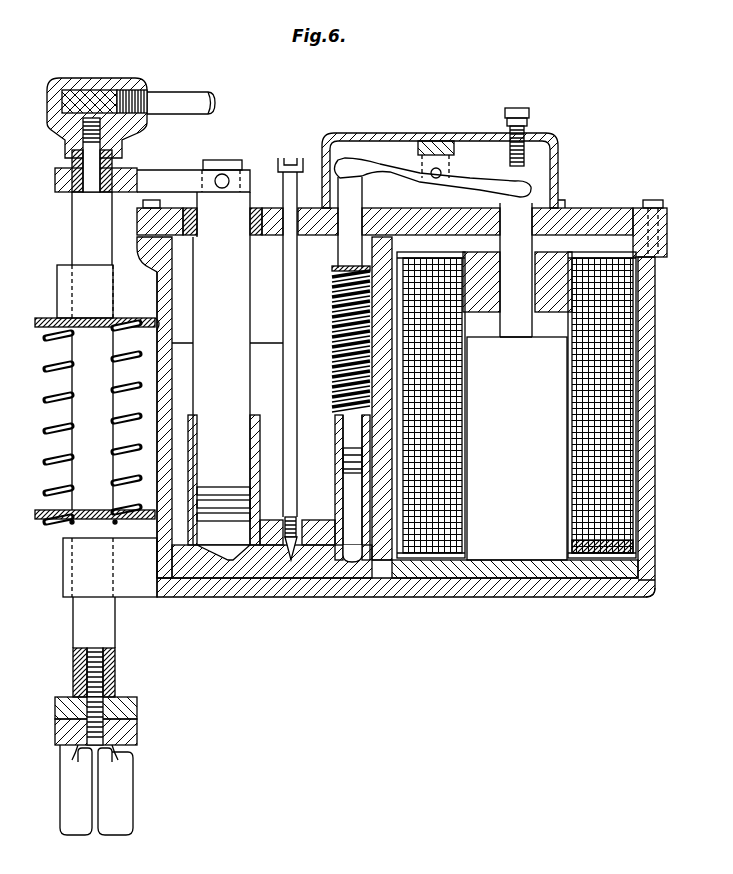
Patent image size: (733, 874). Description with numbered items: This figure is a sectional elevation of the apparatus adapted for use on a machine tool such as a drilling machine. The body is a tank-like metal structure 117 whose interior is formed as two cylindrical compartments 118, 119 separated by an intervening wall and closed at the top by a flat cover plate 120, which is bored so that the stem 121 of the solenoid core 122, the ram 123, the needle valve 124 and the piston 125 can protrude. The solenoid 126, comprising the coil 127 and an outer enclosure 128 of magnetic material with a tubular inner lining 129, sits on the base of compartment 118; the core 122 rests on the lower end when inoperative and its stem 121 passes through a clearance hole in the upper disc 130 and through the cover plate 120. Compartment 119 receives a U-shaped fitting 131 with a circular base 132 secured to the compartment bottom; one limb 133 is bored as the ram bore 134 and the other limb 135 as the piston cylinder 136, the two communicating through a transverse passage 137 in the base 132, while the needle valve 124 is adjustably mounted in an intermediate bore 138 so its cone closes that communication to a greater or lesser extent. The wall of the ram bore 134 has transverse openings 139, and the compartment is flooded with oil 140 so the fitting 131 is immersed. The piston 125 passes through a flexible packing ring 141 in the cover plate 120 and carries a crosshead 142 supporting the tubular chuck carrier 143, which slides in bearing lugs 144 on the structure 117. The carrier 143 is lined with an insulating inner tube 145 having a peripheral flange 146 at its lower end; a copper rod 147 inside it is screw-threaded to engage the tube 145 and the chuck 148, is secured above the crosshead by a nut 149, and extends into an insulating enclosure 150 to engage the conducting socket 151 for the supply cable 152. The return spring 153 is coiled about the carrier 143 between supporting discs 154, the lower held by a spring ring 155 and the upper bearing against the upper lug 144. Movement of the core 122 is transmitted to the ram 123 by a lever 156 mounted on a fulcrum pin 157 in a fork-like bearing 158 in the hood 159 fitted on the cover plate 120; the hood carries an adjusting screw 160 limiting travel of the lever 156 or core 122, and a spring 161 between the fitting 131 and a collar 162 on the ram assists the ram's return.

The tank-like metal structure 117 is at (640, 382).
The cylindrical compartment 118 is at (628, 233).
The cylindrical compartment 119 is at (376, 247).
The cover plate 120 is at (600, 210).
The stem of the solenoid core 121 is at (524, 222).
The solenoid core 122 is at (535, 440).
The ram 123 is at (339, 178).
The needle valve 124 is at (279, 173).
The piston 125 is at (214, 200).
The solenoid 126 is at (655, 578).
The coil 127 is at (610, 540).
The outer enclosure 128 is at (432, 580).
The tubular inner lining 129 is at (463, 520).
The upper disc 130 is at (500, 332).
The U-shaped fitting 131 is at (183, 573).
The circular base 132 is at (234, 573).
The limb 133 is at (367, 597).
The ram bore 134 is at (430, 427).
The limb 135 is at (250, 440).
The piston cylinder 136 is at (199, 430).
The transverse passage 137 is at (276, 562).
The intermediate bore 138 is at (338, 548).
The transverse openings 139 is at (337, 478).
The oil or other selected liquid 140 is at (260, 358).
The flexible packing ring 141 is at (190, 207).
The crosshead 142 is at (204, 165).
The tubular chuck carrier 143 is at (78, 259).
The bearing lugs 144 is at (123, 268).
The inner tube 145 is at (72, 228).
The peripheral flange 146 is at (136, 718).
The rod of copper or like conductor 147 is at (90, 216).
The chuck 148 is at (118, 791).
The nut 149 is at (65, 168).
The insulating enclosure 150 is at (102, 79).
The conducting socket 151 is at (78, 91).
The supply cable 152 is at (186, 92).
The spring 153 is at (58, 364).
The supporting cups or discs 154 is at (40, 320).
The spring ring or collar 155 is at (70, 524).
The lever 156 is at (458, 179).
The fulcrum pin 157 is at (431, 169).
The fork-like bearing 158 is at (451, 141).
The auxiliary cover plate or hood 159 is at (369, 133).
The adjusting screw 160 is at (509, 140).
The spring 161 is at (337, 304).
The collar or spring ring 162 is at (333, 268).